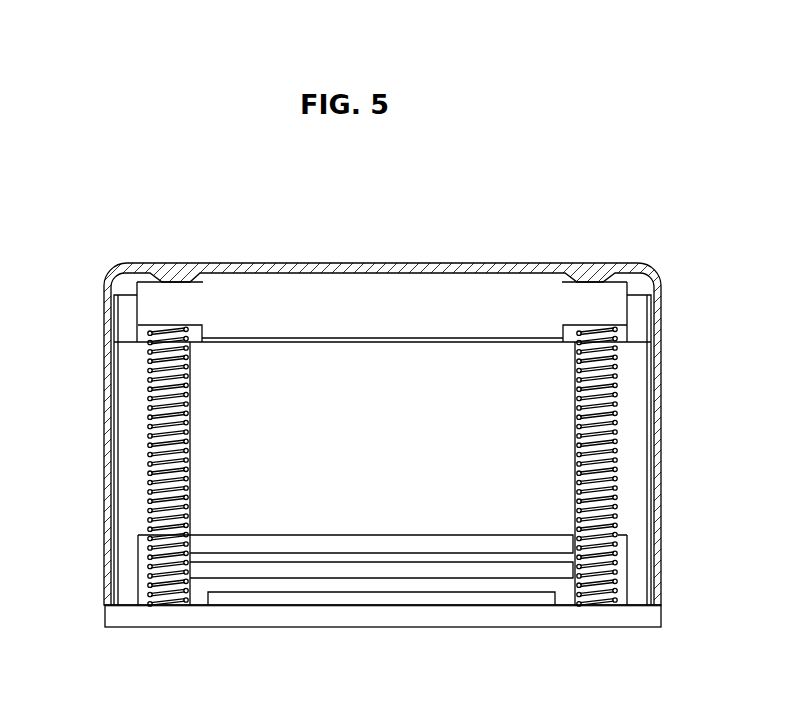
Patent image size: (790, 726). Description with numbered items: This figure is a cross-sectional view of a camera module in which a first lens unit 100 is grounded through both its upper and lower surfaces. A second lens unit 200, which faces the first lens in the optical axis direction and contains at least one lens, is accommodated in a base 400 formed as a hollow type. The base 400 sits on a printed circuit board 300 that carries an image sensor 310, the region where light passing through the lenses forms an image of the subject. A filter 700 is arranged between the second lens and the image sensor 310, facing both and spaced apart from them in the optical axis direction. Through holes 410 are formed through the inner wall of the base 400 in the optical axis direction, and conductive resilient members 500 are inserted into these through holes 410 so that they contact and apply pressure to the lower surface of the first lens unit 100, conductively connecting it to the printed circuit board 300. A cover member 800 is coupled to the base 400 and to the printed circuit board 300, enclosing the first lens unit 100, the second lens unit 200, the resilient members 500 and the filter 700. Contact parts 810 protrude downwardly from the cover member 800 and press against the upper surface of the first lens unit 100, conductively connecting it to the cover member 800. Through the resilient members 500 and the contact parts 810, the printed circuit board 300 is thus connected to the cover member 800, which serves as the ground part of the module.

The first lens unit 100 is at (412, 290).
The second lens unit 200 is at (533, 505).
The printed circuit board 300 is at (217, 618).
The image sensor 310 is at (325, 610).
The base 400 is at (636, 497).
The through holes 410 is at (148, 442).
The resilient members 500 is at (148, 385).
The filter 700 is at (427, 572).
The cover member 800 is at (660, 336).
The contact parts 810 is at (596, 268).